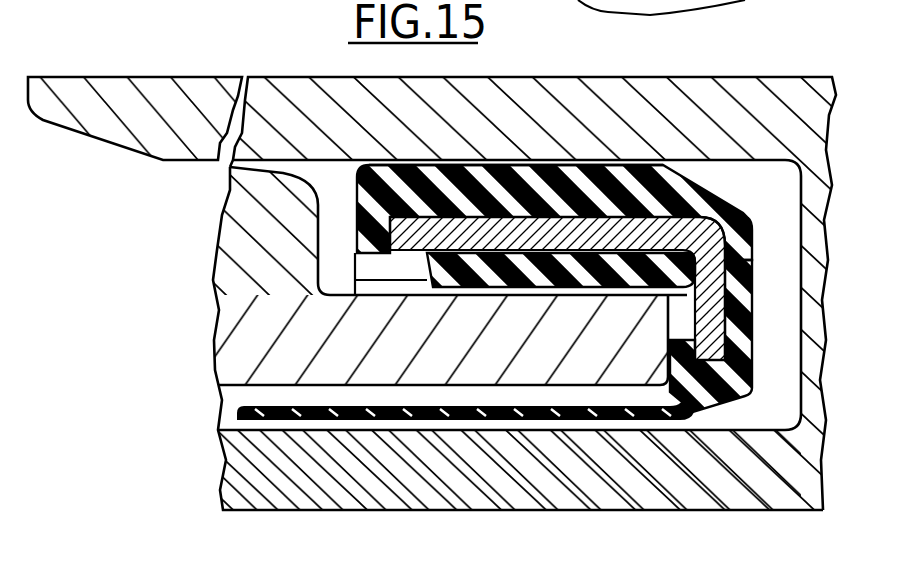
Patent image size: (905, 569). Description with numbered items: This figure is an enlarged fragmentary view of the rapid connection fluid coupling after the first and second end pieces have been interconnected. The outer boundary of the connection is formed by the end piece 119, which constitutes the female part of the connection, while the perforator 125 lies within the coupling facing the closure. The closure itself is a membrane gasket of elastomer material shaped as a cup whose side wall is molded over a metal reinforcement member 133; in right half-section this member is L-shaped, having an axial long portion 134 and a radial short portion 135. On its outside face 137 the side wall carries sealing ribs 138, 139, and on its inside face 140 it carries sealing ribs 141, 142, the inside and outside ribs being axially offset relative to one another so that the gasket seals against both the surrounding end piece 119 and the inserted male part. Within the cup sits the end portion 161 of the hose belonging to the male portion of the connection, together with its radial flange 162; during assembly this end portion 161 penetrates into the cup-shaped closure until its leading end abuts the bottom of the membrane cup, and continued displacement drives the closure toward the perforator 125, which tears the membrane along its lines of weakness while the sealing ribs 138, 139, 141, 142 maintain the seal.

The end piece 119 is at (707, 115).
The perforator 125 is at (397, 473).
The metal reinforcement member 133 is at (743, 215).
The axial long portion 134 is at (582, 235).
The radial short portion 135 is at (730, 295).
The outside face 137 is at (617, 165).
The sealing rib 138 is at (425, 160).
The sealing rib 139 is at (507, 165).
The inside face 140 is at (646, 290).
The sealing rib 141 is at (558, 293).
The sealing rib 142 is at (458, 295).
The end portion 161 is at (596, 350).
The radial flange 162 is at (232, 293).